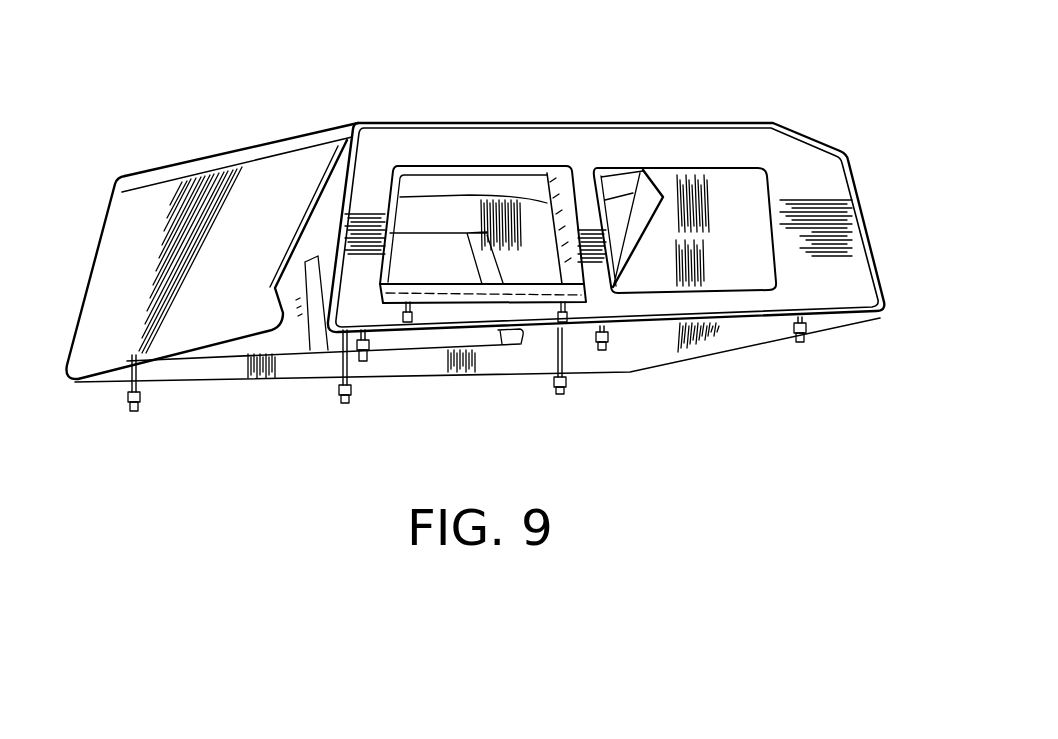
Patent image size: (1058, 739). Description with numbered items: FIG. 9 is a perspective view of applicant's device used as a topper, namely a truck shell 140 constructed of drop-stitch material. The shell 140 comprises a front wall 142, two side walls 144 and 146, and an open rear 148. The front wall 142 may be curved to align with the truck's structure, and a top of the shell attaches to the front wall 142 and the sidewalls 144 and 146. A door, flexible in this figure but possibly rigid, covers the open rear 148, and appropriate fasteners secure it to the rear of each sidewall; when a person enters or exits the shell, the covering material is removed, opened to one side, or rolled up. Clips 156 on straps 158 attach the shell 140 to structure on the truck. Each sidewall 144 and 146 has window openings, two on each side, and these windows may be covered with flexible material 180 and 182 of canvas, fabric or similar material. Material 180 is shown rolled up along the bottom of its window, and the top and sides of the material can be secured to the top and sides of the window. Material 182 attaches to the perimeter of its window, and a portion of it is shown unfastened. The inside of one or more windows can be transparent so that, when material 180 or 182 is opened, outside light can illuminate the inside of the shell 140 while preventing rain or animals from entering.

The shell 140 is at (637, 110).
The front wall 142 is at (710, 338).
The side wall 144 is at (835, 223).
The side wall 146 is at (462, 363).
The open rear 148 is at (321, 248).
The clips 156 is at (143, 403).
The straps 158 is at (132, 378).
The flexible material 180 is at (463, 280).
The flexible material 182 is at (752, 180).